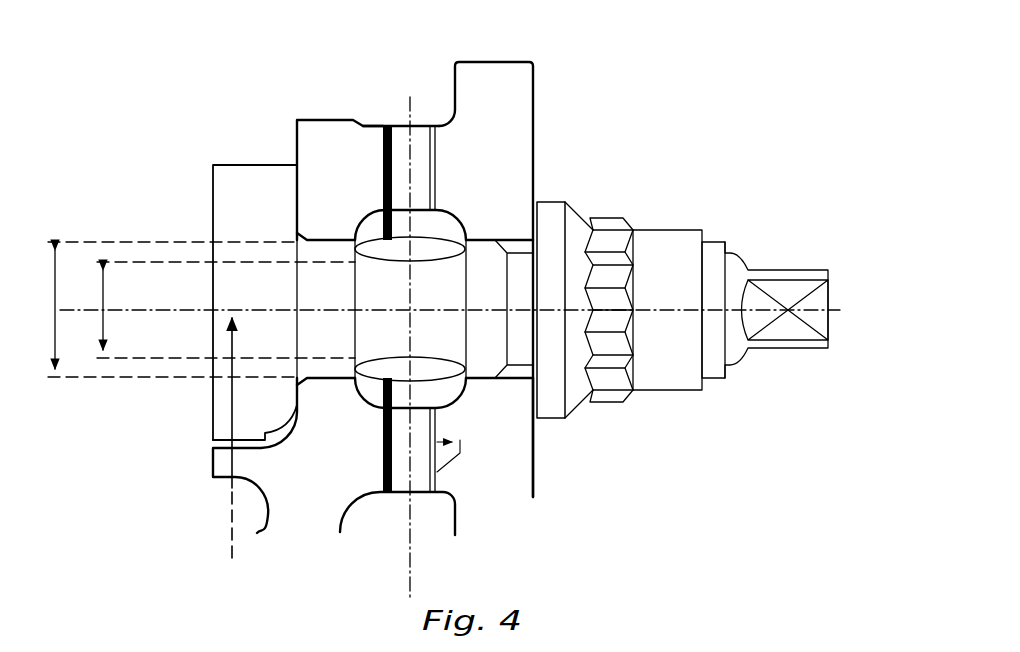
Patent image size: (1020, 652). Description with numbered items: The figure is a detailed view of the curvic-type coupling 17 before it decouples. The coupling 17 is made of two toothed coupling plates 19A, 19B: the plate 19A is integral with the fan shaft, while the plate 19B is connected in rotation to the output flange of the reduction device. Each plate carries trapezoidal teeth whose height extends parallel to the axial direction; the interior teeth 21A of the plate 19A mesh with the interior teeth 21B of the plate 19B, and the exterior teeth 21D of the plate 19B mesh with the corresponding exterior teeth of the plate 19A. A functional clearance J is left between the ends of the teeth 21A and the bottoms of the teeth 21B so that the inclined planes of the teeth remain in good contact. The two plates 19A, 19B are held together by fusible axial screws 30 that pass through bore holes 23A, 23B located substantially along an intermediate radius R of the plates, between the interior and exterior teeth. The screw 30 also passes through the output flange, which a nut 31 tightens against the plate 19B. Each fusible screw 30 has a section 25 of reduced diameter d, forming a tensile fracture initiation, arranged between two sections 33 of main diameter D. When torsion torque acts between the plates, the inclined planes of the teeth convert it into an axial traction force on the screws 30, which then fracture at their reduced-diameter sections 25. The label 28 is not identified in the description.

The coupling 17 is at (405, 507).
The toothed coupling plate 19A is at (325, 142).
The toothed coupling plate 19B is at (495, 95).
The interior teeth 21A is at (395, 124).
The interior teeth 21B is at (425, 497).
The exterior teeth 21D is at (425, 200).
The bore hole 23A is at (322, 382).
The bore hole 23B is at (505, 378).
The section of reduced diameter 25 is at (447, 273).
The rotor assembly 28 is at (644, 78).
The fusible axial screw 30 is at (325, 333).
The nut 31 is at (672, 252).
The section with main diameter 33 is at (315, 285).
The main diameter D is at (163, 309).
The reduced diameter d is at (226, 310).
The intermediate radius R is at (232, 412).
The functional clearance J is at (460, 442).